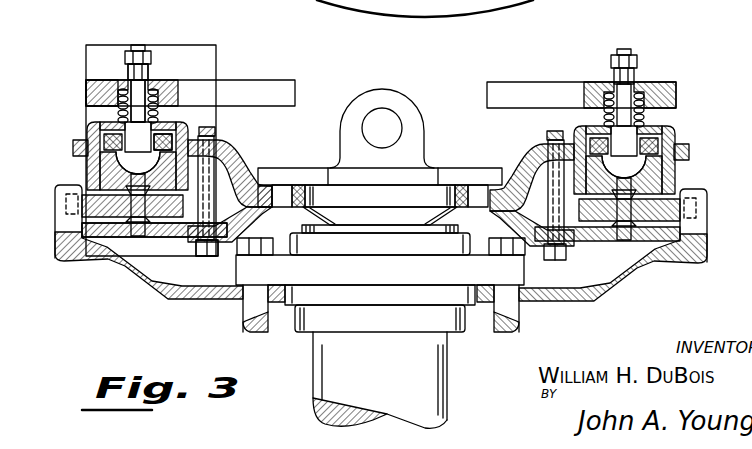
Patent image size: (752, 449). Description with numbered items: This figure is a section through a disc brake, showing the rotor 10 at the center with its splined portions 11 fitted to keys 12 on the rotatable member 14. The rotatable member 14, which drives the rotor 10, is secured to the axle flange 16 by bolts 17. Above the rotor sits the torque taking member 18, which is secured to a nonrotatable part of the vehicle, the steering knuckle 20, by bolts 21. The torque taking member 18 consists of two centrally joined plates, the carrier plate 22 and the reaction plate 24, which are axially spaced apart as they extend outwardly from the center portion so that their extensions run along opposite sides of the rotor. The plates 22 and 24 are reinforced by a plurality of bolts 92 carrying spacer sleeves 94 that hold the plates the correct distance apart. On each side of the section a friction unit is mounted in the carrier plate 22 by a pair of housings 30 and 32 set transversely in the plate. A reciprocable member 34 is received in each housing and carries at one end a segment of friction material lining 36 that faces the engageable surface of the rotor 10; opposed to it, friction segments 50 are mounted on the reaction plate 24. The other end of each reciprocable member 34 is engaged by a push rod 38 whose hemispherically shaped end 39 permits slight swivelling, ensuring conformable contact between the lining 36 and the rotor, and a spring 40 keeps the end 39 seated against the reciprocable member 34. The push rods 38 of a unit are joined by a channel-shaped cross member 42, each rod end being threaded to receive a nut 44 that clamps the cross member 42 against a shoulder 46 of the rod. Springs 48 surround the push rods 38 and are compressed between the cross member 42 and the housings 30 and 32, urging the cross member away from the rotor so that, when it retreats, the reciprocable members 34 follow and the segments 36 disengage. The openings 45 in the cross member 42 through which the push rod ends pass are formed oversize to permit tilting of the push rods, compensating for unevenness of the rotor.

The rotor 10 is at (112, 200).
The splined portions 11 is at (64, 203).
The keys 12 is at (67, 246).
The rotatable member 14 is at (628, 283).
The axle flange 16 is at (232, 304).
The bolts 17 is at (250, 325).
The torque taking member 18 is at (297, 190).
The steering knuckle 20 is at (413, 132).
The bolts 21 is at (283, 190).
The carrier plate 22 is at (236, 156).
The reaction plate 24 is at (240, 221).
The housing 30 is at (193, 127).
The housing 32 is at (687, 133).
The reciprocable member 34 is at (80, 140).
The friction material lining 36 is at (90, 174).
The push rod 38 is at (150, 117).
The hemispherically shaped end 39 is at (162, 128).
The spring 40 is at (93, 122).
The cross member 42 is at (283, 90).
The nut 44 is at (143, 53).
The openings 45 is at (148, 67).
The shoulder 46 is at (126, 66).
The springs 48 is at (108, 97).
The friction segments 50 is at (153, 240).
The bolts 92 is at (216, 135).
The spacer sleeves 94 is at (187, 222).